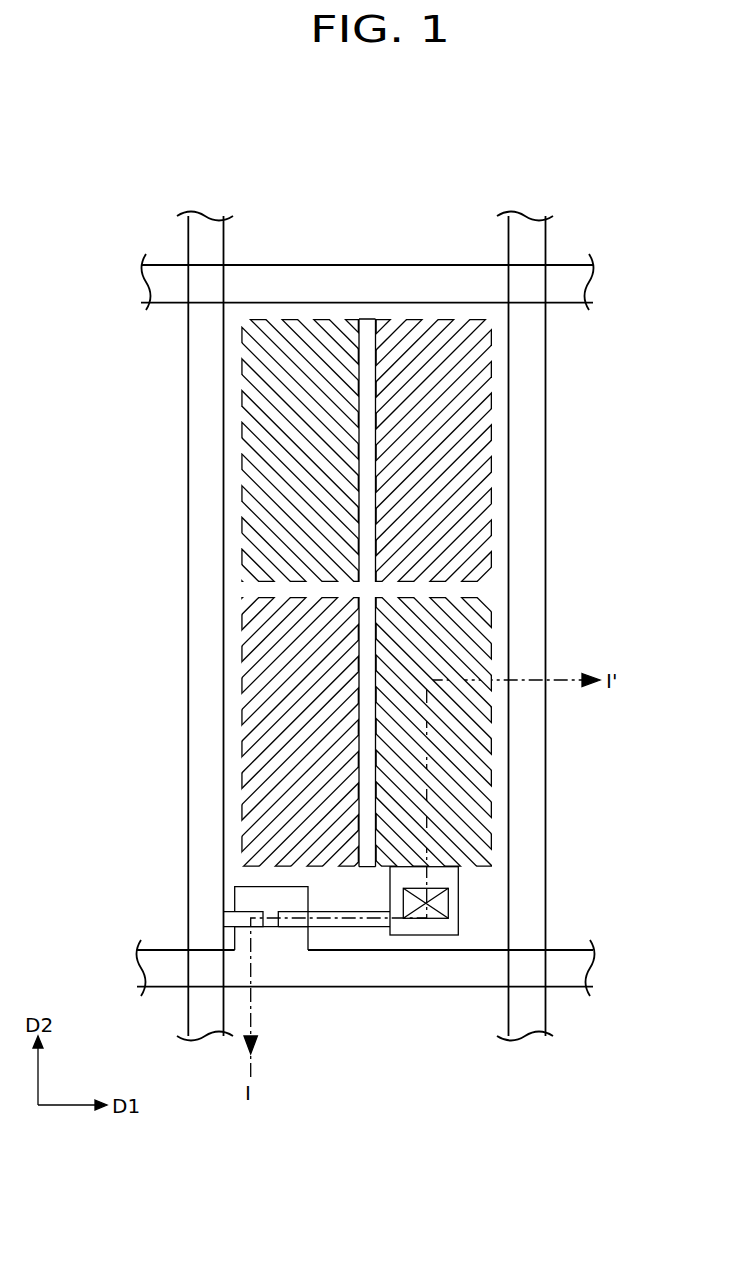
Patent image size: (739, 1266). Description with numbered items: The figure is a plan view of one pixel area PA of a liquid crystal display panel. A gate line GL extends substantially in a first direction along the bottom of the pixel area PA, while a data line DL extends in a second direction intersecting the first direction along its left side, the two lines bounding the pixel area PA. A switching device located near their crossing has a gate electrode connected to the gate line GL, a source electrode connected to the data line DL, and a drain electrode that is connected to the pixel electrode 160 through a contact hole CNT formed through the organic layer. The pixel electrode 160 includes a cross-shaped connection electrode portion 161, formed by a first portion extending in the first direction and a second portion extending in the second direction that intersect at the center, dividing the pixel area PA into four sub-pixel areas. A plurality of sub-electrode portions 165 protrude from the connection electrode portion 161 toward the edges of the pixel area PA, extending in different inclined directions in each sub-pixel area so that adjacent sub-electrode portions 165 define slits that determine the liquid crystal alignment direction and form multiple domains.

The pixel electrode 160 is at (94, 573).
The connection electrode portion 161 is at (245, 583).
The sub-electrode portion 165 is at (245, 641).
The data line DL is at (188, 835).
The gate line GL is at (403, 988).
The contact hole CNT is at (448, 903).
The pixel area PA is at (381, 188).